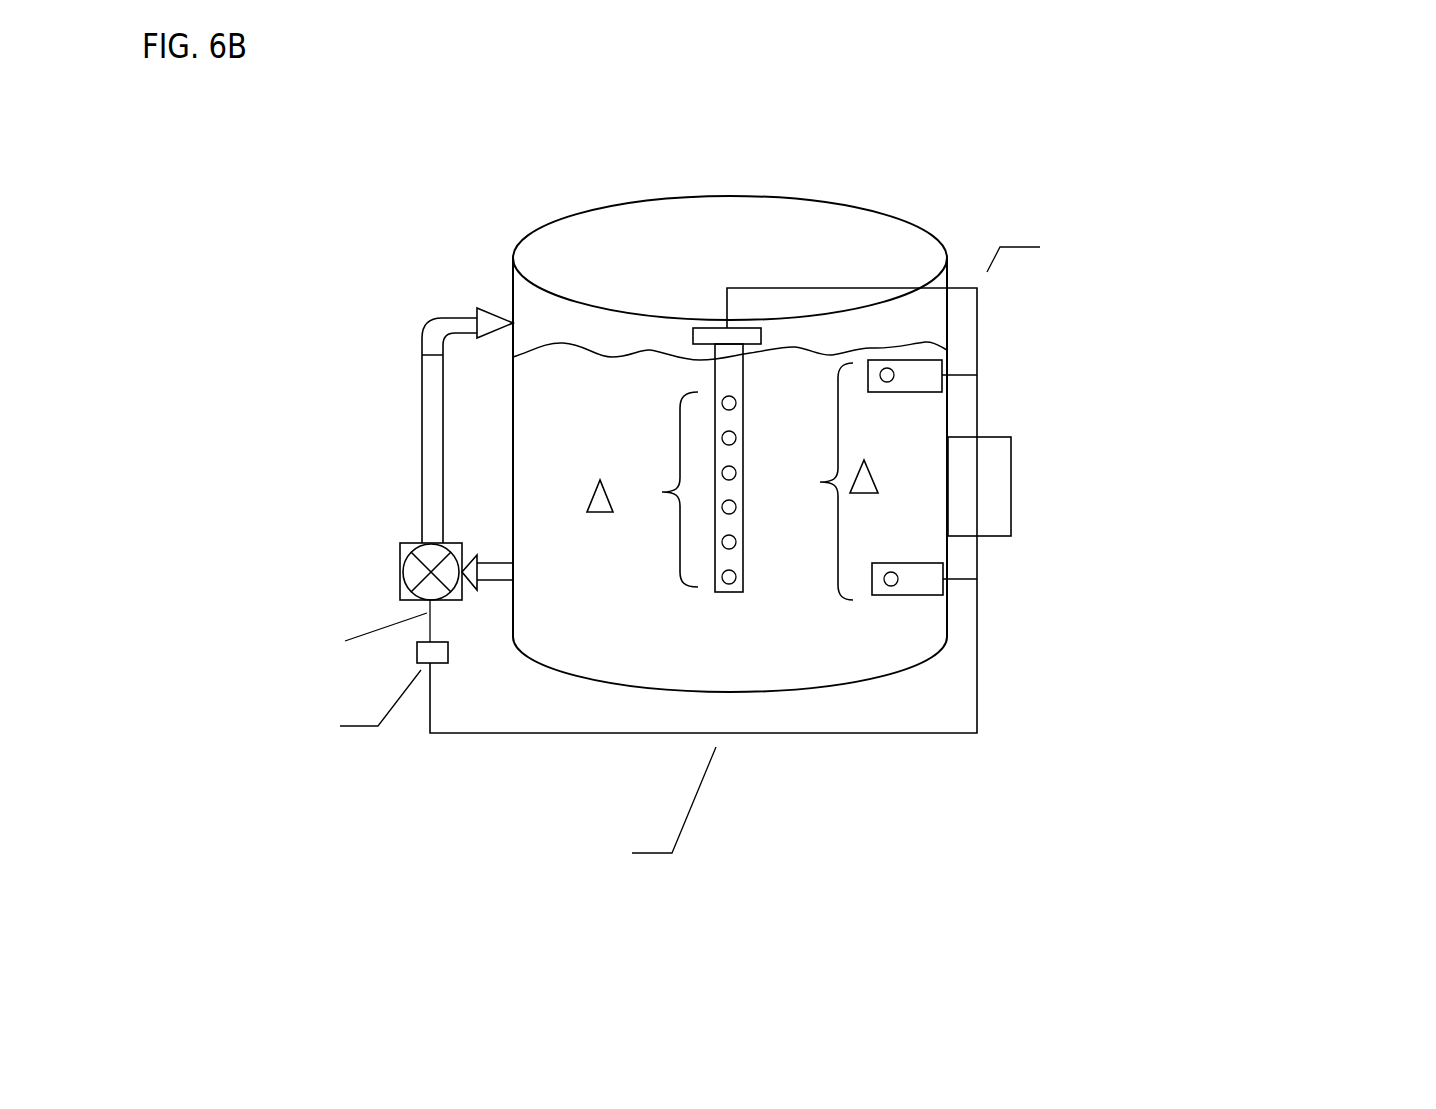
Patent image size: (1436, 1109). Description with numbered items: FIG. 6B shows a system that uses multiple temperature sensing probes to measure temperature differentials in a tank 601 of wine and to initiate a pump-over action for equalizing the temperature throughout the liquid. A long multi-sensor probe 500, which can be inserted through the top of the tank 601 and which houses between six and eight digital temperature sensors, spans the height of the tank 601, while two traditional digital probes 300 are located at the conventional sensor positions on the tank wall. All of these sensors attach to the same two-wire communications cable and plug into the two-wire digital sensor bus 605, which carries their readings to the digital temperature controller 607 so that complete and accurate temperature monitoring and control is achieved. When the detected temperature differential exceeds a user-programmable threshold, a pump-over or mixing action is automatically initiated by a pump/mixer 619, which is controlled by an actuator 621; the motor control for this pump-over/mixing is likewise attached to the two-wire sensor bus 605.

The tank 601 is at (560, 218).
The 2-wire digital sensor bus 605 is at (836, 569).
The multi-sensor probe 500 is at (736, 593).
The digital probe 300 is at (892, 393).
The digital temperature controller 607 is at (1011, 465).
The pump/mixer 619 is at (412, 543).
The actuator 621 is at (448, 655).